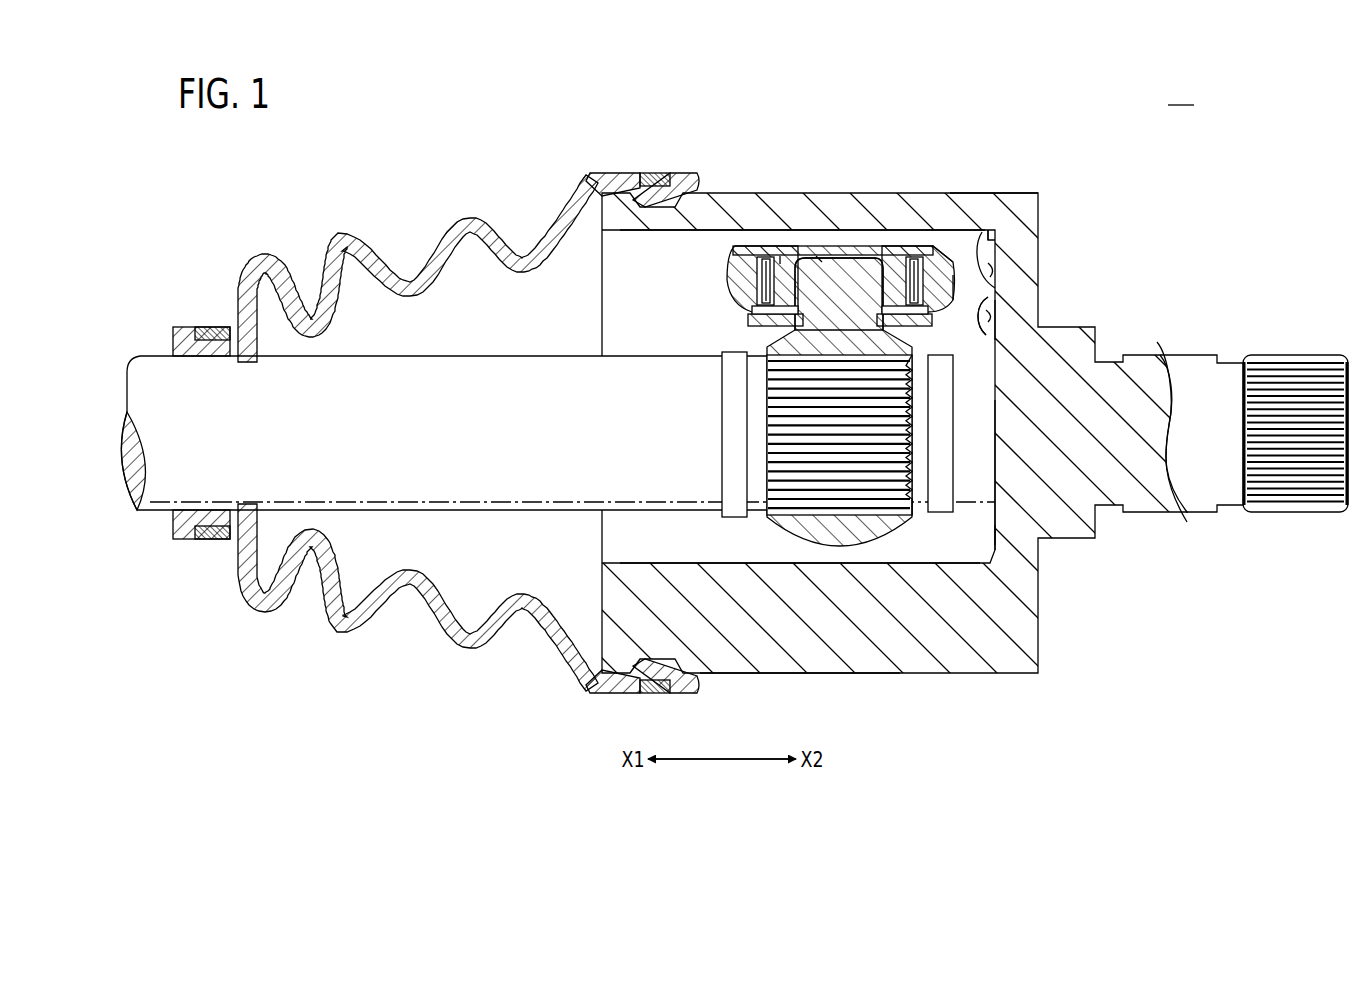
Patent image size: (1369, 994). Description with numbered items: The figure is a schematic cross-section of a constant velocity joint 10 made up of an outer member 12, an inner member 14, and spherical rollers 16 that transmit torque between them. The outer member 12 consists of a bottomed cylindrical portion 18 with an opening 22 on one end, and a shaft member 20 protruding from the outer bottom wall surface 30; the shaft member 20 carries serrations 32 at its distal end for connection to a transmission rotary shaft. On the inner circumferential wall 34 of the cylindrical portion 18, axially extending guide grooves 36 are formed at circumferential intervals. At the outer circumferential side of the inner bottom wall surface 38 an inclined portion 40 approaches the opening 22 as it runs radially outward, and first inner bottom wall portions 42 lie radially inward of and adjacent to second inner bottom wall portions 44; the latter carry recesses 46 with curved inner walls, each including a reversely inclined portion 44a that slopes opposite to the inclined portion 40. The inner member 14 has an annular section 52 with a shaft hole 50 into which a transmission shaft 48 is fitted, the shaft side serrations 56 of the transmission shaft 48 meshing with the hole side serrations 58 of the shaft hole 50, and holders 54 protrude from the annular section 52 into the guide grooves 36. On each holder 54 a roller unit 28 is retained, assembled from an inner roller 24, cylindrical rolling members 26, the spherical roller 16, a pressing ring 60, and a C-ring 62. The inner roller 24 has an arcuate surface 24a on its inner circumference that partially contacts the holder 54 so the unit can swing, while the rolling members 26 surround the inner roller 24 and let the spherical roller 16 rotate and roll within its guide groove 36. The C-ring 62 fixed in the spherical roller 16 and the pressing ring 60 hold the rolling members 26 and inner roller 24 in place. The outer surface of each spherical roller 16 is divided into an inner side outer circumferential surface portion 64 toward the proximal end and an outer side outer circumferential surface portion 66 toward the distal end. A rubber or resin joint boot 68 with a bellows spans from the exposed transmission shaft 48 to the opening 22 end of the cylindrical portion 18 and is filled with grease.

The constant velocity joint 10 is at (1181, 93).
The outer member 12 is at (957, 148).
The inner member 14 is at (871, 553).
The spherical roller 16 is at (727, 267).
The cylindrical portion 18 is at (786, 674).
The shaft member 20 is at (1197, 507).
The opening 22 is at (603, 232).
The inner roller 24 is at (777, 291).
The arcuate surface 24a is at (884, 272).
The rolling member 26 is at (763, 279).
The roller unit 28 is at (748, 245).
The outer bottom wall surface 30 is at (1040, 604).
The serrations 32 is at (1290, 354).
The inner circumferential wall 34 is at (676, 562).
The guide groove 36 is at (862, 238).
The inner bottom wall surface 38 is at (997, 462).
The inclined portion 40 is at (998, 323).
The first inner bottom wall portion 42 is at (951, 319).
The second inner bottom wall portion 44 is at (998, 250).
The recess 46 is at (983, 316).
The reversely inclined portion 44a is at (984, 242).
The transmission shaft 48 is at (462, 356).
The shaft hole 50 is at (798, 508).
The annular section 52 is at (784, 265).
The holder 54 is at (822, 270).
The shaft side serrations 56 is at (808, 470).
The hole side serrations 58 is at (768, 362).
The pressing ring 60 is at (765, 346).
The C-ring 62 is at (757, 327).
The inner side outer circumferential surface portion 64 is at (962, 342).
The outer side outer circumferential surface portion 66 is at (956, 249).
The joint boot 68 is at (343, 233).